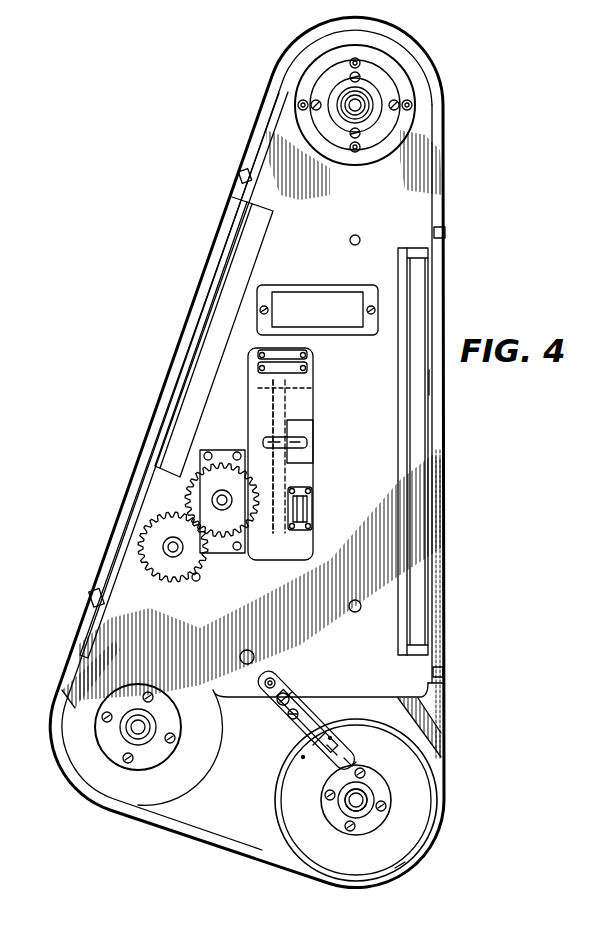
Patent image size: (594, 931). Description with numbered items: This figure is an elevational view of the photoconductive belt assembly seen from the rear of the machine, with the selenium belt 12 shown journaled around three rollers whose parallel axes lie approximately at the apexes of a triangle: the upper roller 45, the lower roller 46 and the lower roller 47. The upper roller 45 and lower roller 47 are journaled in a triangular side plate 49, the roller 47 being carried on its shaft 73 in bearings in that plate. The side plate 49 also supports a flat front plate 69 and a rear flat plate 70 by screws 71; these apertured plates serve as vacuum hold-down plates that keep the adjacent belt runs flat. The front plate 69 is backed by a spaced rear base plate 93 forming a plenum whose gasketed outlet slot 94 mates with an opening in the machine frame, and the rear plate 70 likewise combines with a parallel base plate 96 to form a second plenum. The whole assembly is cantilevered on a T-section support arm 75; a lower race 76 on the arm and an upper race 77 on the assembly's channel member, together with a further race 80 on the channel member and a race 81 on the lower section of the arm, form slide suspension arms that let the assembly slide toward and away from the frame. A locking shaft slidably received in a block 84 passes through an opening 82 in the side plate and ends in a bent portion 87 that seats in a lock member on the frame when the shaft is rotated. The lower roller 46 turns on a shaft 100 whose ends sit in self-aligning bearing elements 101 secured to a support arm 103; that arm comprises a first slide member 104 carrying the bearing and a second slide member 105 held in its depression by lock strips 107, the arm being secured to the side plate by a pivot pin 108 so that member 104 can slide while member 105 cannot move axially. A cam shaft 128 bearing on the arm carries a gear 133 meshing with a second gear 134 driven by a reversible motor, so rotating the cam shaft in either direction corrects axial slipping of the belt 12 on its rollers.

The selenium belt 12 is at (264, 108).
The upper roller 45 is at (283, 64).
The lower roller 46 is at (425, 840).
The lower roller 47 is at (82, 794).
The side plate 49 is at (444, 683).
The front plate 69 is at (442, 273).
The rear flat plate 70 is at (213, 242).
The screws 71 is at (446, 232).
The shaft 73 is at (152, 726).
The support arm 75 is at (312, 397).
The lower race 76 is at (307, 367).
The upper race 77 is at (307, 353).
The race 80 is at (312, 514).
The race 81 is at (312, 497).
The opening 82 is at (250, 403).
The block 84 is at (313, 458).
The bent portion 87 is at (307, 440).
The rear base plate 93 is at (398, 384).
The outlet slot 94 is at (432, 372).
The base plate 96 is at (257, 252).
The shaft 100 is at (370, 806).
The self-aligning bearing element 101 is at (345, 803).
The support arm 103 is at (340, 732).
The first slide member 104 is at (352, 764).
The second slide member 105 is at (302, 733).
The lock strips 107 is at (305, 766).
The pivot pin 108 is at (256, 655).
The cam shaft 128 is at (355, 600).
The gear 133 is at (166, 580).
The second gear 134 is at (224, 466).